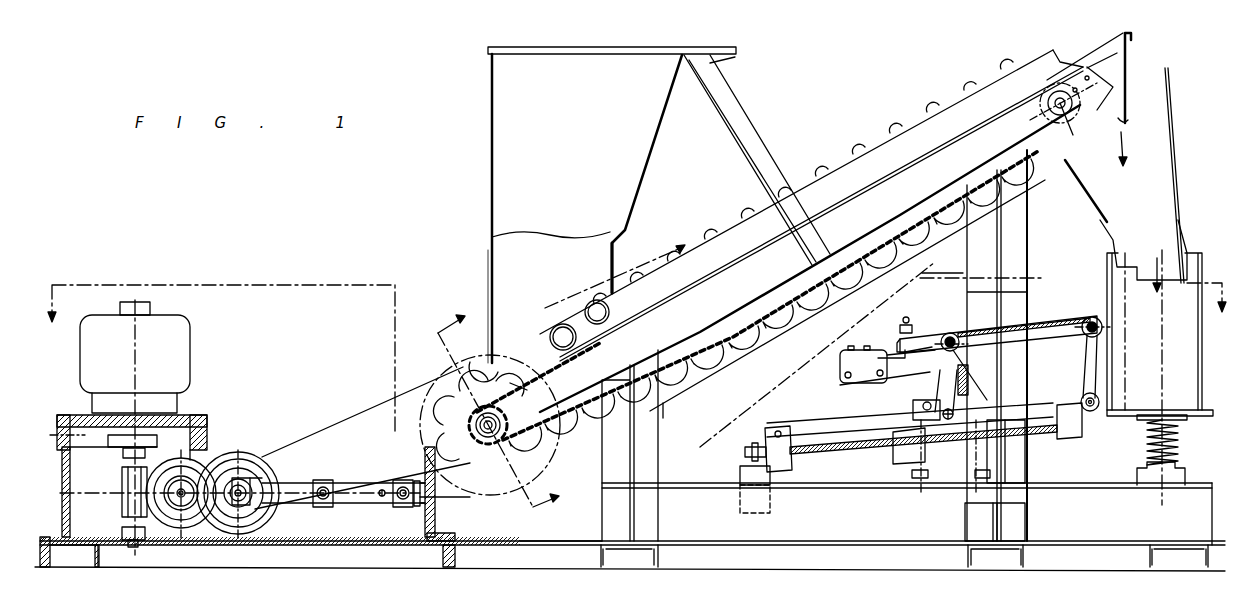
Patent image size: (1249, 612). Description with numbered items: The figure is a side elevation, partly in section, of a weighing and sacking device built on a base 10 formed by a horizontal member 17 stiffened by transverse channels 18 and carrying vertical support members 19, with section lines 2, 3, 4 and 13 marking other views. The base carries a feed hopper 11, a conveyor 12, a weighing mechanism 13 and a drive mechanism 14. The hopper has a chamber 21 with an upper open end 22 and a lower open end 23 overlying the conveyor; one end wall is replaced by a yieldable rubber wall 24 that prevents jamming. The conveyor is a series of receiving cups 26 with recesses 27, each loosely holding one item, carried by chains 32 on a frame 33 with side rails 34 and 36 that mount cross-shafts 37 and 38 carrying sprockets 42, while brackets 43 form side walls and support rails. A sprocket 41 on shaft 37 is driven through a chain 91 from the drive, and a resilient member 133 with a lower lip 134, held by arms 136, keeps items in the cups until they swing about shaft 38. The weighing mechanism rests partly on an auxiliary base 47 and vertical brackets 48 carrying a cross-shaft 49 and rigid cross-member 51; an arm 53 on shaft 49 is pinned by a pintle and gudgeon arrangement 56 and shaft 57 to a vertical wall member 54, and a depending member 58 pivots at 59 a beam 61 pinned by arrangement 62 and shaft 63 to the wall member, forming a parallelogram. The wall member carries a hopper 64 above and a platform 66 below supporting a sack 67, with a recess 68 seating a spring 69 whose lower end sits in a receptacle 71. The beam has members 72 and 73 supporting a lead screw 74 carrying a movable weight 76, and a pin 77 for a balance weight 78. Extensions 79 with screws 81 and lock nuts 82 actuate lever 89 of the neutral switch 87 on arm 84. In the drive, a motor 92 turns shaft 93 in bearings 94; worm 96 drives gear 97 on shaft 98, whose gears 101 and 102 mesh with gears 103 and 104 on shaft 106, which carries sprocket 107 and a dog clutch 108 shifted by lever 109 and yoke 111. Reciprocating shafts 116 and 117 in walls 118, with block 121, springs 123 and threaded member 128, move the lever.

The section line 2- 2 is at (634, 345).
The section line 3- 3 is at (597, 315).
The section line 4- 4 is at (490, 422).
The base 10 is at (770, 548).
The feed hopper 11 is at (490, 158).
The conveyor 12 is at (911, 131).
The weighing mechanism 13 is at (962, 315).
The drive mechanism 14 is at (368, 448).
The horizontal member 17 is at (507, 541).
The transverse channels 18 is at (398, 557).
The vertical support members 19 is at (658, 463).
The chamber 21 is at (492, 258).
The upper open end 22 is at (610, 48).
The lower open end 23 is at (495, 363).
The yieldable wall 24 is at (614, 270).
The receiving cups 26 is at (463, 380).
The recesses 27 is at (473, 367).
The chains 32 is at (672, 355).
The frame 33 is at (743, 273).
The side rail 34 is at (845, 210).
The side rail 36 is at (467, 455).
The cross-shaft 37 is at (492, 450).
The cross-shaft 38 is at (1073, 117).
The sprocket 41 is at (465, 493).
The sprockets 42 is at (508, 422).
The brackets 43 is at (986, 96).
The auxiliary base 47 is at (877, 489).
The vertical brackets 48 is at (977, 457).
The cross-shaft 49 is at (950, 335).
The rigid cross-member 51 is at (977, 367).
The arm 53 is at (1033, 325).
The vertical wall member 54 is at (1107, 272).
The pintle and gudgeon arrangements 56 is at (1093, 318).
The shafts 57 is at (1092, 338).
The depending member 58 is at (969, 383).
The pivot 59 is at (958, 412).
The beam 61 is at (817, 425).
The pintle and gudgeon arrangement 62 is at (1097, 380).
The shaft 63 is at (1087, 395).
The hopper 64 is at (1168, 143).
The platform 66 is at (1202, 410).
The sack 67 is at (1200, 337).
The recess 68 is at (1183, 423).
The spring 69 is at (1182, 440).
The receptacle 71 is at (1180, 462).
The member 72 is at (1077, 433).
The member 73 is at (790, 467).
The lead screw 74 is at (857, 457).
The weight 76 is at (895, 455).
The pin 77 is at (743, 450).
The balance weight 78 is at (743, 475).
The extensions 79 is at (925, 330).
The threaded screws 81 is at (904, 317).
The lock nuts 82 is at (900, 330).
The extending arm 84 is at (840, 377).
The neutral switch 87 is at (840, 363).
The actuating lever 89 is at (923, 367).
The chain 91 is at (385, 403).
The electric motor 92 is at (182, 348).
The shaft 93 is at (122, 462).
The bearings 94 is at (122, 527).
The worm gear 96 is at (122, 480).
The gear 97 is at (200, 453).
The shaft 98 is at (183, 502).
The low speed gear 101 is at (173, 505).
The high speed gear 102 is at (187, 463).
The low speed gear 103 is at (257, 453).
The high speed gear 104 is at (243, 523).
The shaft 106 is at (253, 505).
The sprocket 107 is at (233, 460).
The dog clutch 108 is at (230, 502).
The lever 109 is at (302, 483).
The yoke 111 is at (253, 477).
The reciprocating shaft 116 is at (323, 487).
The reciprocating shaft 117 is at (405, 480).
The walls 118 is at (433, 520).
The block 121 is at (417, 481).
The springs 123 is at (380, 495).
The threaded member 128 is at (400, 497).
The resilient rubber member 133 is at (1130, 60).
The lower lip 134 is at (1126, 122).
The arms 136 is at (1107, 53).